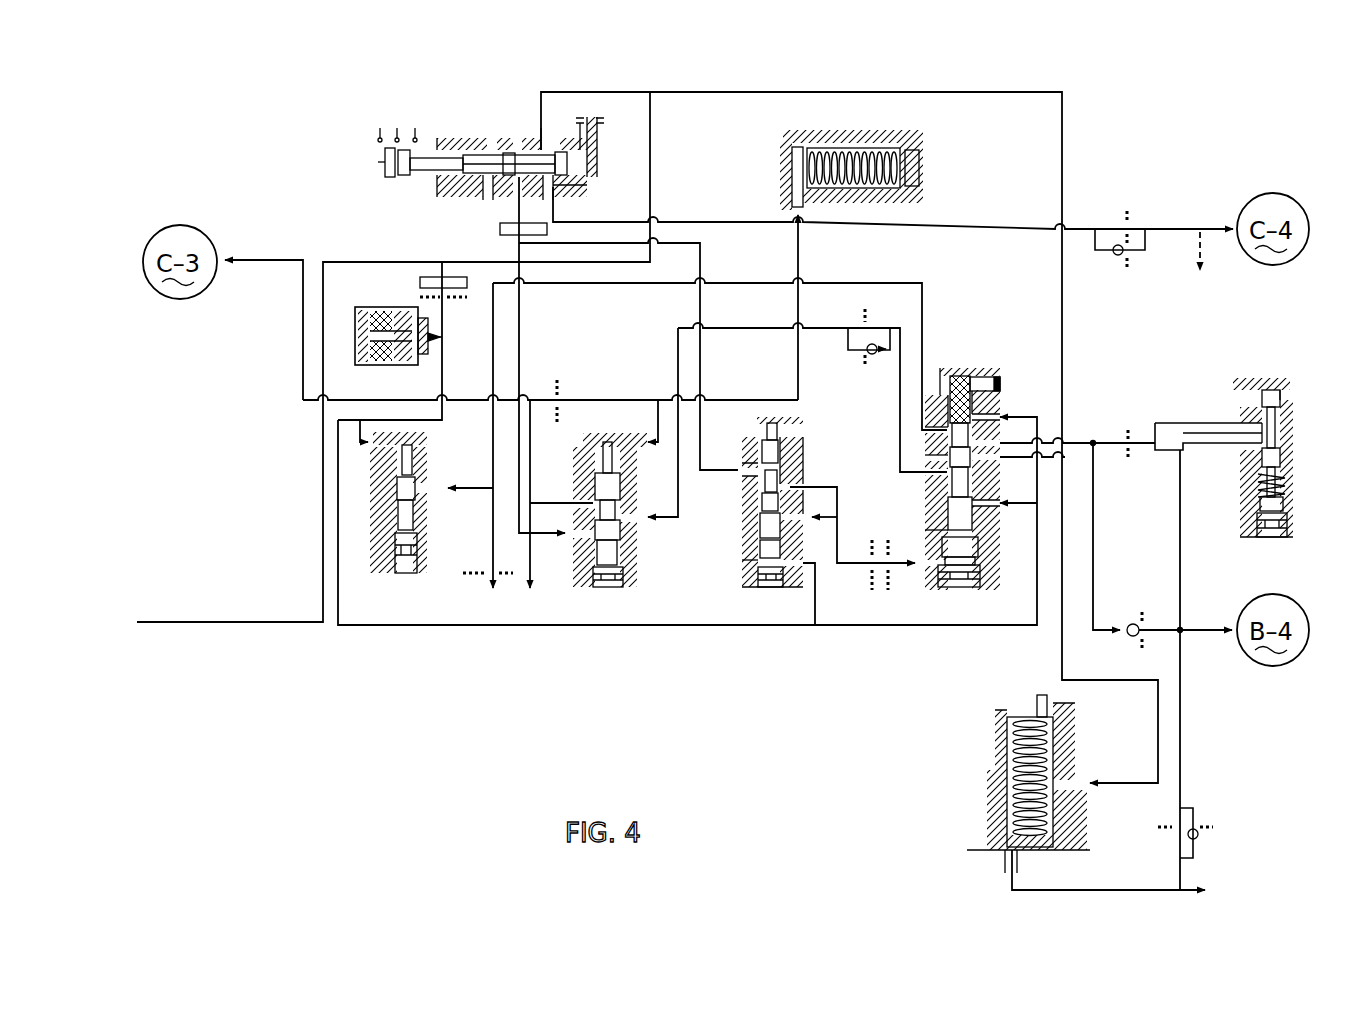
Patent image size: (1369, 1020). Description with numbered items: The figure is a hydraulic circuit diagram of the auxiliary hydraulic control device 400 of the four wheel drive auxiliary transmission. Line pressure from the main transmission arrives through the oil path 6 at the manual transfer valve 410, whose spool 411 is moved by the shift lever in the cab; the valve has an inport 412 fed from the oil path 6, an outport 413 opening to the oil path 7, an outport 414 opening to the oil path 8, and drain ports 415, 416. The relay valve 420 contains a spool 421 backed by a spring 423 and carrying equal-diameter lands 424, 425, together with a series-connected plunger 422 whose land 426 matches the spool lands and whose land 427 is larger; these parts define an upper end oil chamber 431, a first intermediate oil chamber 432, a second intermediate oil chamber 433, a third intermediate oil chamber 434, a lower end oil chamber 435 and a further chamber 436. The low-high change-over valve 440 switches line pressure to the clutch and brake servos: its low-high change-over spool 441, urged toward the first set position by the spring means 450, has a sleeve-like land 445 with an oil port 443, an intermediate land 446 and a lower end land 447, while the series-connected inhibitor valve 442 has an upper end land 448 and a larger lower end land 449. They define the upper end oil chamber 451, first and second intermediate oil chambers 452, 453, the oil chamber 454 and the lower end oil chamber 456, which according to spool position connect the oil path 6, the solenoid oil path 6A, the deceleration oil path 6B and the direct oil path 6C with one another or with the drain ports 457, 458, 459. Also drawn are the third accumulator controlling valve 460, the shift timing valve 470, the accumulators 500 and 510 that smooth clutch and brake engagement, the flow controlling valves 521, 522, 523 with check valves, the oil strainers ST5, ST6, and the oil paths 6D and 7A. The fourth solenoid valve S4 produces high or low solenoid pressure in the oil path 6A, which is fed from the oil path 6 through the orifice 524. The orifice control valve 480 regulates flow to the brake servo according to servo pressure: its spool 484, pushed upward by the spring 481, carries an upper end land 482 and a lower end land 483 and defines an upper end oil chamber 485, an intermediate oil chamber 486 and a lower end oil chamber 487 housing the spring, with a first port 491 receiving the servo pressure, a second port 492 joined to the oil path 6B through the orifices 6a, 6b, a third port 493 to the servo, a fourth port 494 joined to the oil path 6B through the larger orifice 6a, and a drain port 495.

The auxiliary hydraulic control device 400 is at (1137, 136).
The manual transfer valve 410 is at (503, 151).
The spool 411 is at (430, 168).
The inport 412 is at (537, 137).
The outport 413 is at (513, 193).
The outport 414 is at (588, 186).
The drain port 415 is at (480, 187).
The drain port 416 is at (591, 153).
The relay valve 420 is at (787, 545).
The spool 421 is at (791, 446).
The plunger 422 is at (812, 512).
The spring 423 is at (758, 420).
The land 424 is at (757, 459).
The land 425 is at (756, 484).
The land 426 is at (758, 545).
The land 427 is at (757, 576).
The upper end oil chamber 431 is at (762, 434).
The first intermediate oil chamber 432 is at (793, 466).
The second intermediate oil chamber 433 is at (757, 523).
The third intermediate oil chamber 434 is at (757, 560).
The lower end oil chamber 435 is at (757, 589).
The shift valve spool land 436 is at (757, 503).
The low-high change-over valve 440 is at (956, 491).
The low-high change-over spool 441 is at (946, 449).
The inhibitor valve 442 is at (986, 546).
The oil port 443 is at (993, 375).
The sleeve-like land 445 is at (972, 376).
The intermediate land 446 is at (986, 436).
The lower end land 447 is at (985, 484).
The upper end land 448 is at (985, 521).
The lower end land 449 is at (986, 566).
The spring means 450 is at (963, 368).
The upper end oil chamber 451 is at (945, 358).
The first intermediate oil chamber 452 is at (946, 432).
The second intermediate oil chamber 453 is at (946, 463).
The oil chamber 454 is at (946, 506).
The lower end oil chamber 456 is at (986, 583).
The drain port 457 is at (946, 491).
The drain port 458 is at (990, 393).
The drain port 459 is at (946, 412).
The third accumulator controlling valve 460 is at (595, 598).
The shift timing valve 470 is at (395, 582).
The orifice control valve 480 is at (1262, 467).
The spring 481 is at (1288, 504).
The upper end land 482 is at (1286, 390).
The lower end land 483 is at (1288, 483).
The spool 484 is at (1286, 416).
The upper end oil chamber 485 is at (1283, 380).
The intermediate oil chamber 486 is at (1286, 441).
The lower end oil chamber 487 is at (1290, 526).
The first port 491 is at (1241, 380).
The second port 492 is at (1256, 430).
The third port 493 is at (1246, 466).
The fourth port 494 is at (1246, 481).
The drain port 495 is at (1246, 516).
The accumulator 500 is at (934, 147).
The accumulator 510 is at (978, 823).
The flow controlling valve with check valve 521 is at (872, 343).
The flow controlling valve with check valve 522 is at (1118, 256).
The flow controlling valve with check valve 523 is at (1198, 836).
The orifice 524 is at (447, 300).
The fourth solenoid valve S4 is at (358, 346).
The oil strainer ST5 is at (420, 282).
The oil strainer ST6 is at (498, 241).
The oil path 6 is at (655, 92).
The oil path 6A is at (815, 628).
The deceleration oil path 6B is at (1093, 446).
The direct oil path 6C is at (678, 334).
The line pressure passage branch 6D is at (530, 400).
The orifice 6a is at (1126, 430).
The orifice 6b is at (1160, 422).
The oil path 7 is at (517, 212).
The pressure passage branch 7A is at (837, 505).
The oil path 8 is at (555, 213).